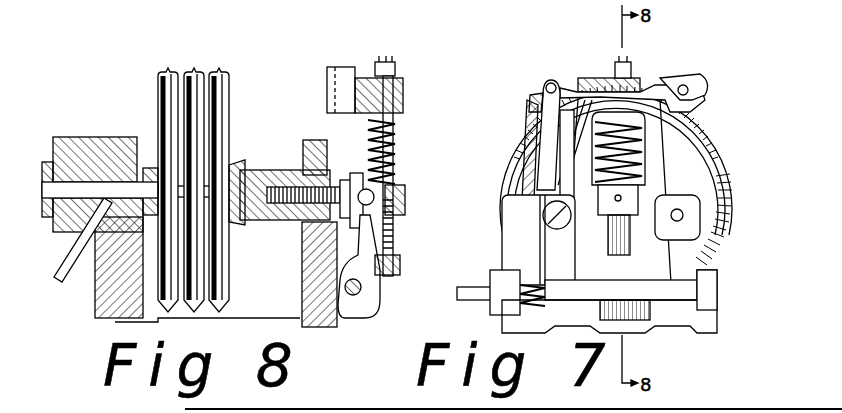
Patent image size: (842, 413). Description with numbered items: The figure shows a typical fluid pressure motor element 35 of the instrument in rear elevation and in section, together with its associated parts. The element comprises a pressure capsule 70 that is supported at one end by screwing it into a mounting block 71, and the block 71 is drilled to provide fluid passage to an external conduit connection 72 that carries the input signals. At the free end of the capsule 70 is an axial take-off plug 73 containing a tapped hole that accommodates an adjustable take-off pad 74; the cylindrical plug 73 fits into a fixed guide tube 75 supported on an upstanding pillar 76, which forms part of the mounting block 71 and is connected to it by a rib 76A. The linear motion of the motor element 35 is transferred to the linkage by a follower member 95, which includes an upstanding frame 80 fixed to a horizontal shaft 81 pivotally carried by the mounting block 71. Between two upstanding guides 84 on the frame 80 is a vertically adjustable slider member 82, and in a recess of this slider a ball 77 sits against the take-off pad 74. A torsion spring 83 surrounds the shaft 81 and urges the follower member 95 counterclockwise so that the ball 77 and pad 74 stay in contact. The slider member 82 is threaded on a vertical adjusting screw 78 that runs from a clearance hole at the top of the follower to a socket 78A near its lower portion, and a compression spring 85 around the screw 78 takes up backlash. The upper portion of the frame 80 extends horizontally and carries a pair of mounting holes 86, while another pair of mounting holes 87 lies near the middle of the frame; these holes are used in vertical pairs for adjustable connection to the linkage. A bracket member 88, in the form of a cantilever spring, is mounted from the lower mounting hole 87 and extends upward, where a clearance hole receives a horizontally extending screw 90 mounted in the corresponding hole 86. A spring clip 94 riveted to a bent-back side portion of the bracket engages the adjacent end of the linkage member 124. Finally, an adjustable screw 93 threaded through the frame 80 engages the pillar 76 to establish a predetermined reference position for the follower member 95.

In FIG. 8, the motor element 35 is at (188, 174).
In FIG. 7, the motor element 35 is at (590, 70).
In FIG. 8, the pressure capsule 70 is at (218, 84).
In FIG. 7, the pressure capsule 70 is at (728, 209).
In FIG. 8, the mounting block 71 is at (86, 137).
In FIG. 8, the external conduit connection 72 is at (67, 280).
In FIG. 8, the axial take-off plug 73 is at (250, 178).
In FIG. 8, the adjustable take-off pad 74 is at (355, 178).
In FIG. 8, the fixed guide tube 75 is at (300, 212).
In FIG. 8, the upstanding pillar 76 is at (305, 270).
In FIG. 8, the rib 76A is at (285, 320).
In FIG. 8, the ball 77 is at (376, 192).
In FIG. 8, the vertical adjusting screw 78 is at (380, 62).
In FIG. 7, the vertical adjusting screw 78 is at (630, 74).
In FIG. 8, the socket 78A is at (386, 276).
In FIG. 7, the socket 78A is at (640, 320).
In FIG. 8, the upstanding frame 80 is at (403, 100).
In FIG. 7, the upstanding frame 80 is at (630, 100).
In FIG. 8, the horizontal shaft 81 is at (360, 292).
In FIG. 7, the horizontal shaft 81 is at (474, 292).
In FIG. 8, the slider member 82 is at (405, 190).
In FIG. 7, the slider member 82 is at (648, 248).
In FIG. 7, the torsion spring 83 is at (528, 283).
In FIG. 7, the upstanding guides 84 is at (640, 185).
In FIG. 8, the compression spring 85 is at (398, 140).
In FIG. 7, the compression spring 85 is at (690, 125).
In FIG. 8, the mounting holes 86 is at (333, 84).
In FIG. 7, the mounting holes 86 is at (690, 86).
In FIG. 7, the mounting holes 87 is at (700, 200).
In FIG. 7, the bracket member 88 is at (502, 201).
In FIG. 7, the screw 90 is at (550, 82).
In FIG. 7, the adjustable screw 93 is at (560, 185).
In FIG. 7, the spring clip 94 is at (527, 108).
In FIG. 8, the follower member 95 is at (410, 78).
In FIG. 7, the follower member 95 is at (712, 259).
In FIG. 7, the linkage member 124 is at (540, 92).